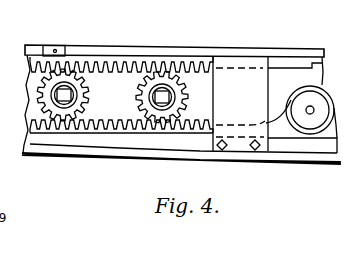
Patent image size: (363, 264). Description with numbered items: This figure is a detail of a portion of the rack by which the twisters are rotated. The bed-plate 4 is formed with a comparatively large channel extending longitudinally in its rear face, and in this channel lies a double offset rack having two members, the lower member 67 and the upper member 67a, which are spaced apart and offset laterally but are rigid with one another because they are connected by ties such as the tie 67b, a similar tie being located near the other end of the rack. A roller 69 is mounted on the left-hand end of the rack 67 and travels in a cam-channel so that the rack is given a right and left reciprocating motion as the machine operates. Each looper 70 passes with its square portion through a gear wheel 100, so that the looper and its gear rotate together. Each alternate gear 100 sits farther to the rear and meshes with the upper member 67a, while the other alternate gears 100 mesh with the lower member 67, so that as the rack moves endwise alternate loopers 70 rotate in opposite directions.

The bed-plate 4 is at (135, 46).
The upper rack member 67a is at (108, 62).
The lower rack member 67 is at (119, 131).
The gear wheel 100 is at (43, 87).
The looper 70 is at (71, 95).
The tie 67b is at (240, 104).
The roller 69 is at (311, 120).